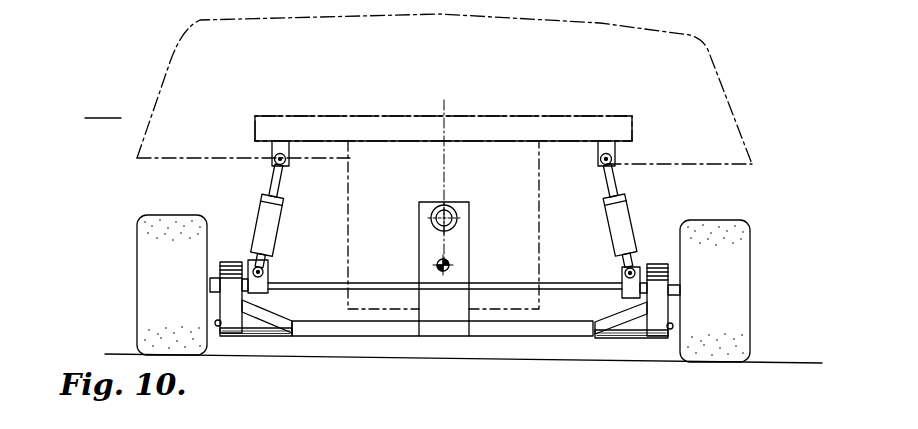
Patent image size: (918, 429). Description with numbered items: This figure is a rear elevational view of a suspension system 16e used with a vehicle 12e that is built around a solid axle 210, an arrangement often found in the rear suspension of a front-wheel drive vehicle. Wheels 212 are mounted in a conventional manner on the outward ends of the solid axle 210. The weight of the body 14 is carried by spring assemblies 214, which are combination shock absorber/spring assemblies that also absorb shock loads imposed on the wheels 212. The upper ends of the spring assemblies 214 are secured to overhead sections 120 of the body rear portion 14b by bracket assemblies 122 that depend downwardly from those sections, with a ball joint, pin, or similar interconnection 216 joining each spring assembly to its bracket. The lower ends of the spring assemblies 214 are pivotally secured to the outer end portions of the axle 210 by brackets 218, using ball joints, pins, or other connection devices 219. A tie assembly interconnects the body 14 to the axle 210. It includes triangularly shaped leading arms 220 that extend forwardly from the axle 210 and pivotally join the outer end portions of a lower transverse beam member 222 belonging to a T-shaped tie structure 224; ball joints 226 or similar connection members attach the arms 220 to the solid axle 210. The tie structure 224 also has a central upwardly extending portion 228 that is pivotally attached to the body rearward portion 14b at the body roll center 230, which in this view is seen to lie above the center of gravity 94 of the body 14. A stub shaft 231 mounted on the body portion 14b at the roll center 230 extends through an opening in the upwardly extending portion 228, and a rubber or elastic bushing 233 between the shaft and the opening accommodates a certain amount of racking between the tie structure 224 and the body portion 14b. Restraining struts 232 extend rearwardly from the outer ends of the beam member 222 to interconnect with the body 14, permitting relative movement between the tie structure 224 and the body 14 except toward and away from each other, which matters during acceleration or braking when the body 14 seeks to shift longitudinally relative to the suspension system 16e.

The body 14 is at (709, 51).
The body rear portion 14b is at (478, 118).
The vehicle 12e is at (103, 107).
The overhead sections 120 is at (618, 118).
The bracket assemblies 122 is at (274, 156).
The interconnection 216 is at (274, 163).
The spring assemblies 214 is at (262, 216).
The brackets 218 is at (268, 277).
The connection devices 219 is at (265, 271).
The ball joints 226 is at (668, 282).
The solid axle 210 is at (560, 291).
The central upwardly extending portion 228 is at (470, 222).
The body roll center 230 is at (455, 205).
The stub shaft 231 is at (440, 206).
The bushing 233 is at (431, 222).
The center of gravity 94 is at (449, 265).
The lower transverse beam member 222 is at (517, 337).
The T-shaped tie structure 224 is at (444, 311).
The leading arms 220 is at (256, 337).
The restraining struts 232 is at (218, 322).
The wheels 212 is at (752, 253).
The suspension system 16e is at (568, 367).